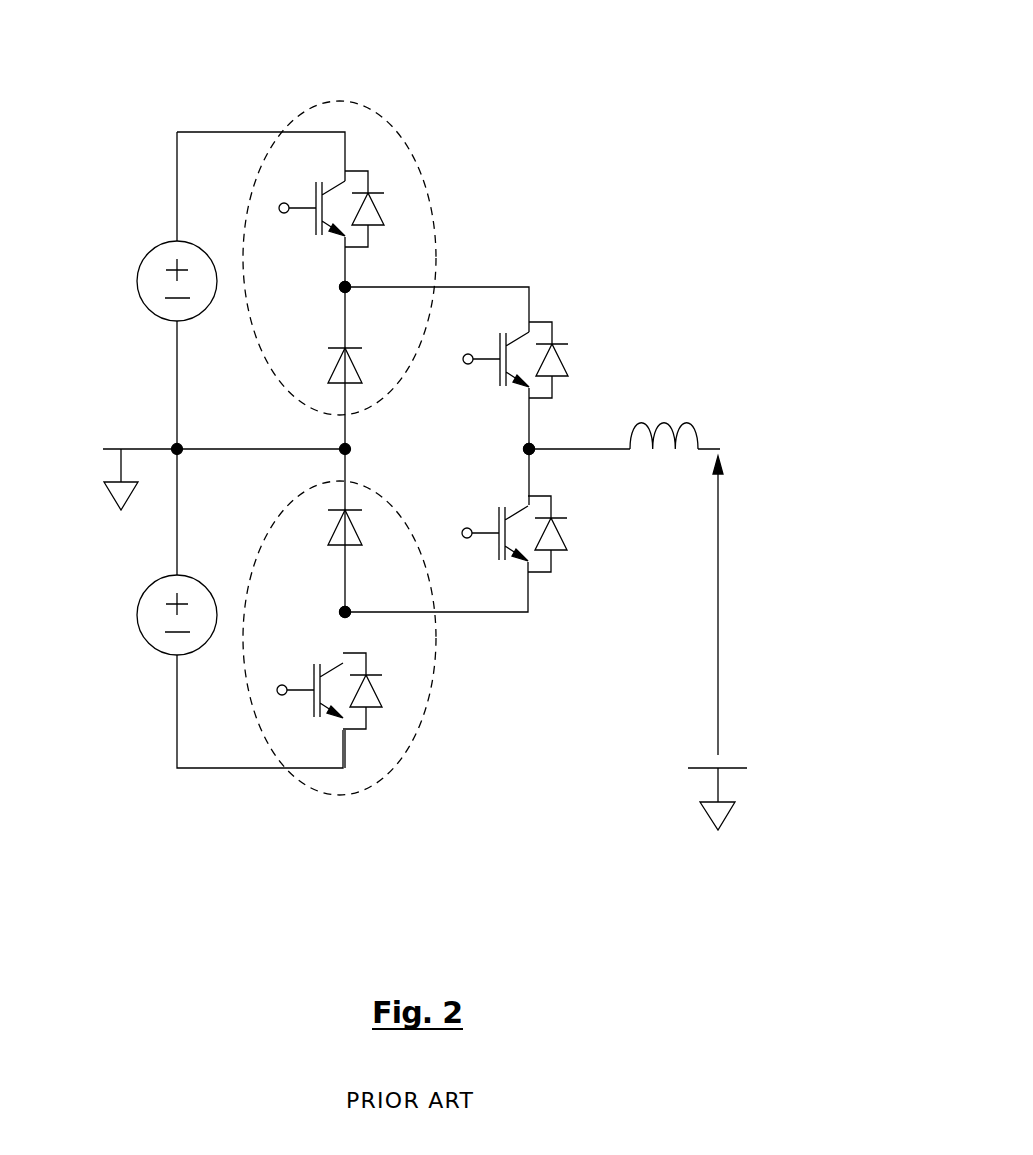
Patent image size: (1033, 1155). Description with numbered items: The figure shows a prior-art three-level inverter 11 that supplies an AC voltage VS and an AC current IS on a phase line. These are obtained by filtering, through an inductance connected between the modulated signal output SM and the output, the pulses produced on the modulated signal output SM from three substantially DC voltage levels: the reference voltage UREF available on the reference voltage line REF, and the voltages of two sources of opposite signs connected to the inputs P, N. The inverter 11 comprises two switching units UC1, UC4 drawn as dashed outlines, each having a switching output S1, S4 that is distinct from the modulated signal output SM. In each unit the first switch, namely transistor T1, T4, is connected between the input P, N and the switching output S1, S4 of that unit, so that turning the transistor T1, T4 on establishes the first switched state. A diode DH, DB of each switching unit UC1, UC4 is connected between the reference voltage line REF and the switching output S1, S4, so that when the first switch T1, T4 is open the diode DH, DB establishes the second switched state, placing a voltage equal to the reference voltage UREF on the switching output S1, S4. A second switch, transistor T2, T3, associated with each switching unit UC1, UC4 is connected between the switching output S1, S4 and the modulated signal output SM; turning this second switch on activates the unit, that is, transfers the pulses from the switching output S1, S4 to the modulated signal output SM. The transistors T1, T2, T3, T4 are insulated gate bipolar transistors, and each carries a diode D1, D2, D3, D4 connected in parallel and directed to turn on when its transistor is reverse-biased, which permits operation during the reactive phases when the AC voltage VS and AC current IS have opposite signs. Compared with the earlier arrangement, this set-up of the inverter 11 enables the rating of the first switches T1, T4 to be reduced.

The three-level inverter 11 is at (702, 92).
The switching unit UC1 is at (400, 133).
The switching unit UC4 is at (415, 743).
The transistor T1 is at (312, 208).
The transistor T2 is at (496, 359).
The transistor T3 is at (495, 533).
The transistor T4 is at (310, 690).
The diode D1 is at (379, 209).
The diode D2 is at (563, 360).
The diode D3 is at (562, 534).
The diode D4 is at (377, 691).
The diode DH is at (359, 365).
The diode DB is at (359, 527).
The switching output S1 is at (347, 285).
The switching output S4 is at (348, 613).
The modulated signal output SM is at (532, 447).
The AC current IS is at (684, 410).
The AC voltage VS is at (732, 605).
The reference voltage line REF is at (424, 654).
The reference voltage UREF is at (212, 433).
The input P is at (201, 111).
The input N is at (196, 754).